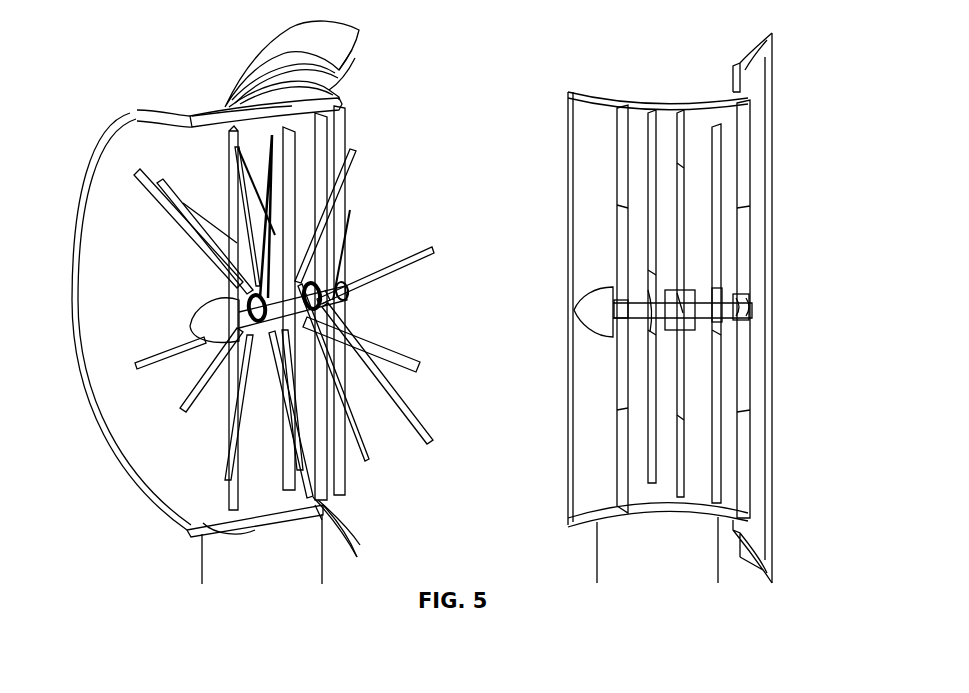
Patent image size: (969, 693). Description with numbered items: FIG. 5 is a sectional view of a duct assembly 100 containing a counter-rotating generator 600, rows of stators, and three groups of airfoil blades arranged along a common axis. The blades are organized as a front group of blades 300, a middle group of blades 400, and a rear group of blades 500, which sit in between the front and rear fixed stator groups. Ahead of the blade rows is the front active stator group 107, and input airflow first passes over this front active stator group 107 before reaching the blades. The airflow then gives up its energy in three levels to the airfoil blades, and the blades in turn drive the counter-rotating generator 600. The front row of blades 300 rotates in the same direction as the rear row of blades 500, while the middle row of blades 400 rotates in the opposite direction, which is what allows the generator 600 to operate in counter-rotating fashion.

The propulsion device 100 is at (192, 120).
The front active stator group 107 is at (612, 278).
The front group of blades 300 is at (647, 426).
The middle group of blades 400 is at (673, 459).
The rear group of blades 500 is at (724, 468).
The counter-rotating generator 600 is at (668, 293).